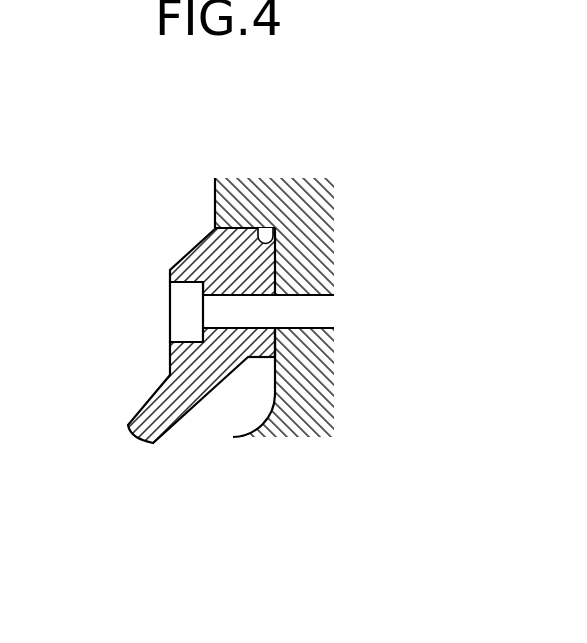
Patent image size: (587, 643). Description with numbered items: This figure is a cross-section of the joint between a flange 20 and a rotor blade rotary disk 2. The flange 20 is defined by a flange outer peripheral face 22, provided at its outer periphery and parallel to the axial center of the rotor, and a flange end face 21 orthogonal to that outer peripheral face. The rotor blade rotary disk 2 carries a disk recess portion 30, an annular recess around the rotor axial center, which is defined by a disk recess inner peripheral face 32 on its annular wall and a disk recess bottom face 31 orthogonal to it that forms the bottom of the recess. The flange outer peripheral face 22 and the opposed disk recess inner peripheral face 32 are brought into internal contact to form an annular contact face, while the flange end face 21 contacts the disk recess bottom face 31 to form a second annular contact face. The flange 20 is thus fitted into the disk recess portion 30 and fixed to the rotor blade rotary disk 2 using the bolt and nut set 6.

The rotor blade rotary disk 2 is at (318, 215).
The flange 20 is at (187, 254).
The flange end face 21 is at (277, 280).
The flange outer peripheral face 22 is at (240, 228).
The disk recess inner peripheral face 32 is at (267, 236).
The bolt and nut set 6 is at (170, 312).
The disk recess portion 30 is at (253, 363).
The disk recess bottom face 31 is at (277, 390).